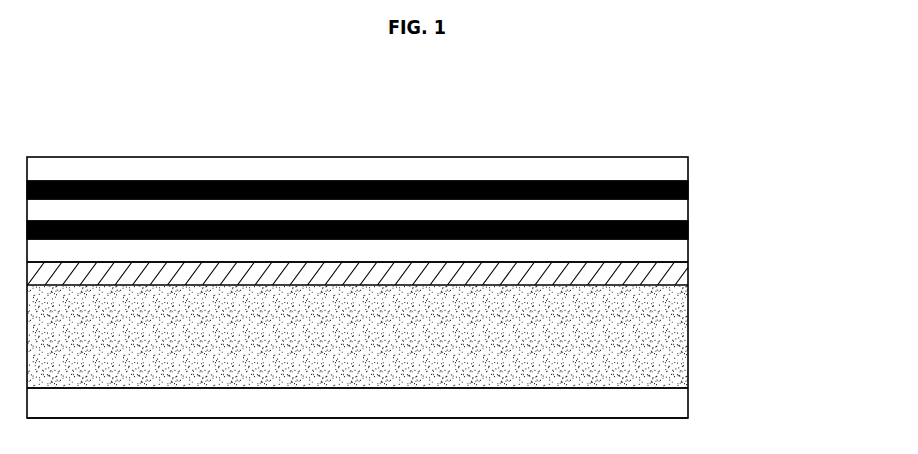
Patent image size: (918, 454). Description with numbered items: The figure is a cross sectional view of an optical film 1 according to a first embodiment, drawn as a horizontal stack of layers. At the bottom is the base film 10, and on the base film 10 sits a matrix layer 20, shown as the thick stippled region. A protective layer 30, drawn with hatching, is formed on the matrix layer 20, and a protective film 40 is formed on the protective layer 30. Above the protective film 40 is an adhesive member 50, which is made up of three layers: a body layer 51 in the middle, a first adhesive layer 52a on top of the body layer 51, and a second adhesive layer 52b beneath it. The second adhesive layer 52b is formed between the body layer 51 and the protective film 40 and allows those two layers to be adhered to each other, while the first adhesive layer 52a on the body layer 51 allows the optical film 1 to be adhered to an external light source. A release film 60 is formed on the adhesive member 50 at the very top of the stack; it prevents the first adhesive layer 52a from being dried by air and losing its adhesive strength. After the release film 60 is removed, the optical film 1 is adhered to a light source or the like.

The optical film 1 is at (76, 100).
The base film 10 is at (677, 402).
The matrix layer 20 is at (677, 340).
The protective layer 30 is at (678, 273).
The protective film 40 is at (677, 252).
The adhesive member 50 is at (422, 207).
The body layer 51 is at (677, 210).
The first adhesive layer 52a is at (688, 189).
The second adhesive layer 52b is at (688, 229).
The release film 60 is at (677, 169).